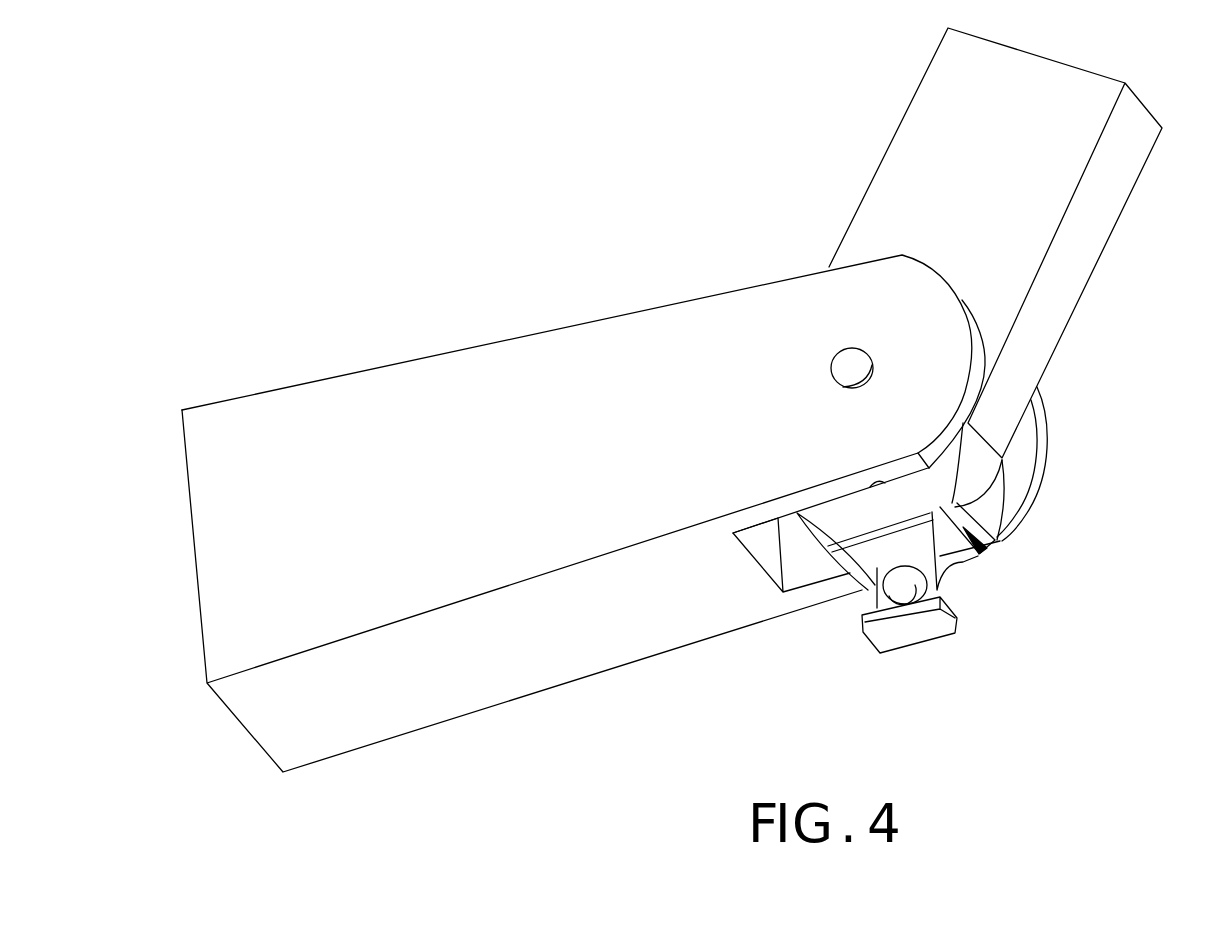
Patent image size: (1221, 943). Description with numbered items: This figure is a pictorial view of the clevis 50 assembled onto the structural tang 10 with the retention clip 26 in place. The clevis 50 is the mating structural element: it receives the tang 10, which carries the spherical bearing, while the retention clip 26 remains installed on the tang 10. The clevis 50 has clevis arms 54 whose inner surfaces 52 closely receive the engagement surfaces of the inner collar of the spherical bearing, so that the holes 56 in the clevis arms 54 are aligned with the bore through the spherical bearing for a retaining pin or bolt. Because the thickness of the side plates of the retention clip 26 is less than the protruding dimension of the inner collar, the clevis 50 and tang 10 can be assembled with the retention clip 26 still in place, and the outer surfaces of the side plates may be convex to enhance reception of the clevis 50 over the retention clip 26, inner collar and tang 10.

The tang 10 is at (1012, 188).
The retention clip 26 is at (983, 553).
The clevis 50 is at (442, 402).
The inner surfaces 52 is at (790, 577).
The clevis arms 54 is at (838, 297).
The holes 56 is at (842, 387).